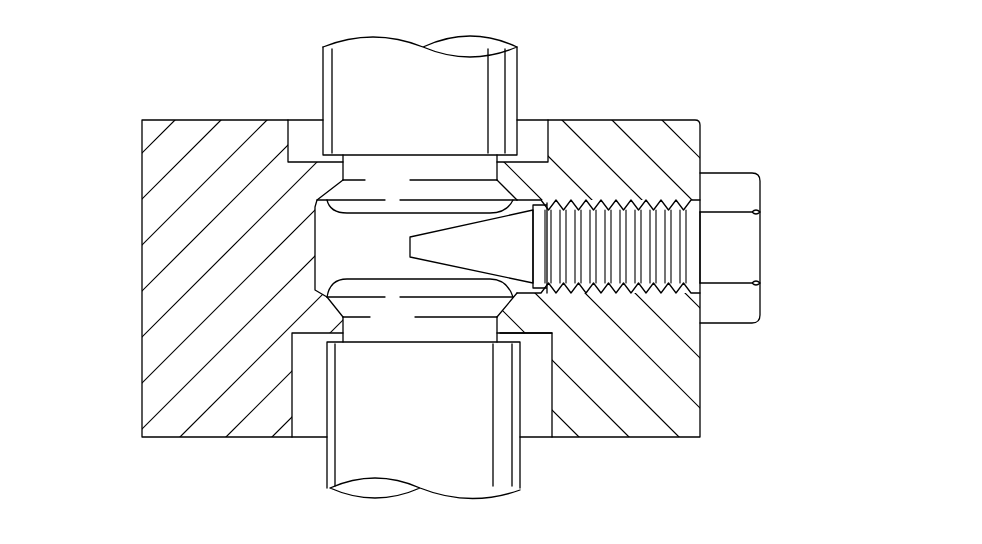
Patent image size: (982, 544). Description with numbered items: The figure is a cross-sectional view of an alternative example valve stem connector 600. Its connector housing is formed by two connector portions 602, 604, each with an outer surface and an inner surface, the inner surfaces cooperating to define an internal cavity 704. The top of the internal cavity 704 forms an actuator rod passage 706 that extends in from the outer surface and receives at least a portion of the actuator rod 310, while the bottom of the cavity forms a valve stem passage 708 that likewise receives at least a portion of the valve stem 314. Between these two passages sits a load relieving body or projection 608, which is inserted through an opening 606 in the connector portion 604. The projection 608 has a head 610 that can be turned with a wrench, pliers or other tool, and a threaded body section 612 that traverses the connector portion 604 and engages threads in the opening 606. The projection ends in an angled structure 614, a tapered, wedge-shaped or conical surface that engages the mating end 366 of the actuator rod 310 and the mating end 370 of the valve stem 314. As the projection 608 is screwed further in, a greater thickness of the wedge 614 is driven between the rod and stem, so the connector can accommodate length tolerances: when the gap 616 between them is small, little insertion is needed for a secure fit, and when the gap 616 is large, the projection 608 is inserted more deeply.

The valve stem connector 600 is at (185, 54).
The connector portion 602 is at (142, 255).
The connector portion 604 is at (630, 120).
The opening 606 is at (636, 298).
The load relieving body 608 is at (724, 163).
The head 610 is at (757, 283).
The body section 612 is at (703, 219).
The angled structure 614 is at (521, 257).
The gap 616 is at (313, 256).
The end of the actuator rod 366 is at (392, 216).
The end of the valve stem 370 is at (390, 281).
The actuator rod 310 is at (322, 58).
The valve stem 314 is at (325, 460).
The internal cavity 704 is at (535, 127).
The actuator rod passage 706 is at (307, 128).
The valve stem passage 708 is at (537, 433).